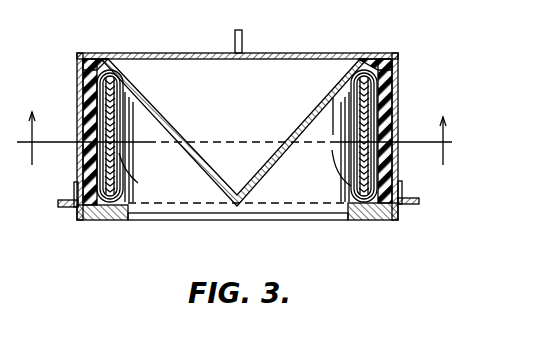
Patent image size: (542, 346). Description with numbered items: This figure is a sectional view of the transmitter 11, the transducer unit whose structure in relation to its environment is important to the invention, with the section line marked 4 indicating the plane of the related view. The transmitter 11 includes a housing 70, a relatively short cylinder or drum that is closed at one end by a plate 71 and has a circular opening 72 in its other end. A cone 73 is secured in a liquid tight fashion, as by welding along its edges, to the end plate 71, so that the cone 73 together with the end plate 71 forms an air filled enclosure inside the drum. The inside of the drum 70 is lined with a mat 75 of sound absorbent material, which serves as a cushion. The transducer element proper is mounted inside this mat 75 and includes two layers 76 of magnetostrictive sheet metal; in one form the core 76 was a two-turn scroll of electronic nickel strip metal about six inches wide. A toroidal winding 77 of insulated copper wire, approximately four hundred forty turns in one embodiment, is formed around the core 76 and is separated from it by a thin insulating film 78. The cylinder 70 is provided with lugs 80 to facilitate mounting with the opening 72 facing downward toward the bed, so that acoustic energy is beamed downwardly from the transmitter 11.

The housing 70 is at (398, 54).
The plate 71 is at (262, 56).
The circular opening 72 is at (318, 216).
The cone 73 is at (164, 118).
The mat 75 is at (388, 91).
The core 76 is at (110, 182).
The toroidal winding 77 is at (139, 181).
The insulating film 78 is at (118, 164).
The lugs 80 is at (62, 204).
The transmitter 11 is at (250, 102).
The section line 4- 4 is at (237, 157).